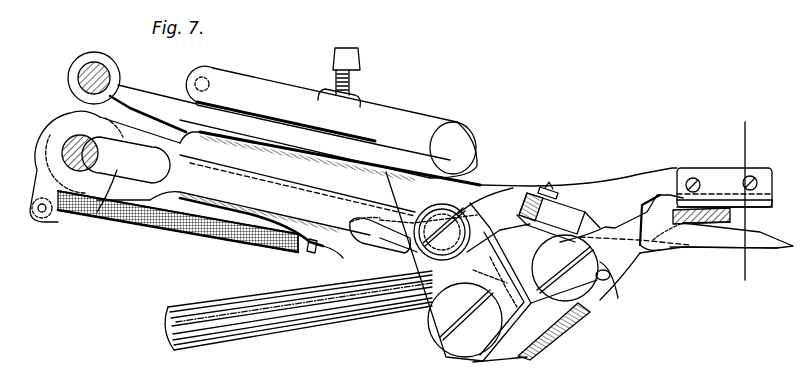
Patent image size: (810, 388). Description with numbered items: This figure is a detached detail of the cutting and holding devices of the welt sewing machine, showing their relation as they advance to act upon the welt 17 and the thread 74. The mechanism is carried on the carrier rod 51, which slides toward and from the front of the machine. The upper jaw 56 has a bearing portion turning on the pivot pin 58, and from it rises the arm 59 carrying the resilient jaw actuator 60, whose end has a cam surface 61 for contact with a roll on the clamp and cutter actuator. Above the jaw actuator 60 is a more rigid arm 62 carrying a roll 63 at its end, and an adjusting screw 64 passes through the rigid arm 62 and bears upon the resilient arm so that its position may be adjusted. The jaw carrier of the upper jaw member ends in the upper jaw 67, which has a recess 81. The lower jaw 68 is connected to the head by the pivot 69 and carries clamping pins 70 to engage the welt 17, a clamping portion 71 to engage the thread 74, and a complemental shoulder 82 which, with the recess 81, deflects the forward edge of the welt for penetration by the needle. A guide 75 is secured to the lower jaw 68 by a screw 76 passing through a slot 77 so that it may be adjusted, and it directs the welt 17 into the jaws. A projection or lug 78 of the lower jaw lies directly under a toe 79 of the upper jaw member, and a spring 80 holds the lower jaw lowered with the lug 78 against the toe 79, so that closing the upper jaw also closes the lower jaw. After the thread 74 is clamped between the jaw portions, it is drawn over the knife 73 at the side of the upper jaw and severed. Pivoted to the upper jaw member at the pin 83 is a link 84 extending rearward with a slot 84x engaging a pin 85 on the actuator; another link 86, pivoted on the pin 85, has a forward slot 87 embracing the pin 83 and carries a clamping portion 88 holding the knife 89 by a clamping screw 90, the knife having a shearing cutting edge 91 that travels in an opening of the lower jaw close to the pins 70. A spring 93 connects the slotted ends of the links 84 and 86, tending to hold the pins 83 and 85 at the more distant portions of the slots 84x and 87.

The welt 17 is at (693, 222).
The carrier rod 51 is at (315, 323).
The upper jaw 56 is at (630, 182).
The pivot pin 58 is at (435, 333).
The arm 59 is at (458, 125).
The jaw actuator 60 is at (267, 138).
The cam surface 61 is at (137, 107).
The rigid arm 62 is at (125, 42).
The roll 63 is at (210, 78).
The adjusting screw 64 is at (353, 84).
The upper jaw 67 is at (710, 168).
The lower jaw 68 is at (657, 250).
The pivot 69 is at (580, 283).
The clamping pins 70 is at (663, 243).
The clamping portion 71 is at (765, 255).
The knife 73 is at (763, 207).
The thread 74 is at (747, 137).
The guide 75 is at (650, 207).
The screw 76 is at (617, 298).
The slot 77 is at (608, 297).
The projection or lug 78 is at (503, 268).
The toe 79 is at (507, 253).
The spring 80 is at (530, 353).
The recess 81 is at (667, 190).
The shoulder 82 is at (683, 227).
The pin 83 is at (480, 185).
The link 84 is at (363, 181).
The slot or opening 84x is at (60, 225).
The pin 85 is at (70, 133).
The link 86 is at (215, 245).
The slot 87 is at (370, 250).
The clamping portion 88 is at (572, 210).
The knife 89 is at (592, 227).
The clamping screw 90 is at (557, 174).
The cutting edge 91 is at (600, 227).
The spring 93 is at (180, 240).